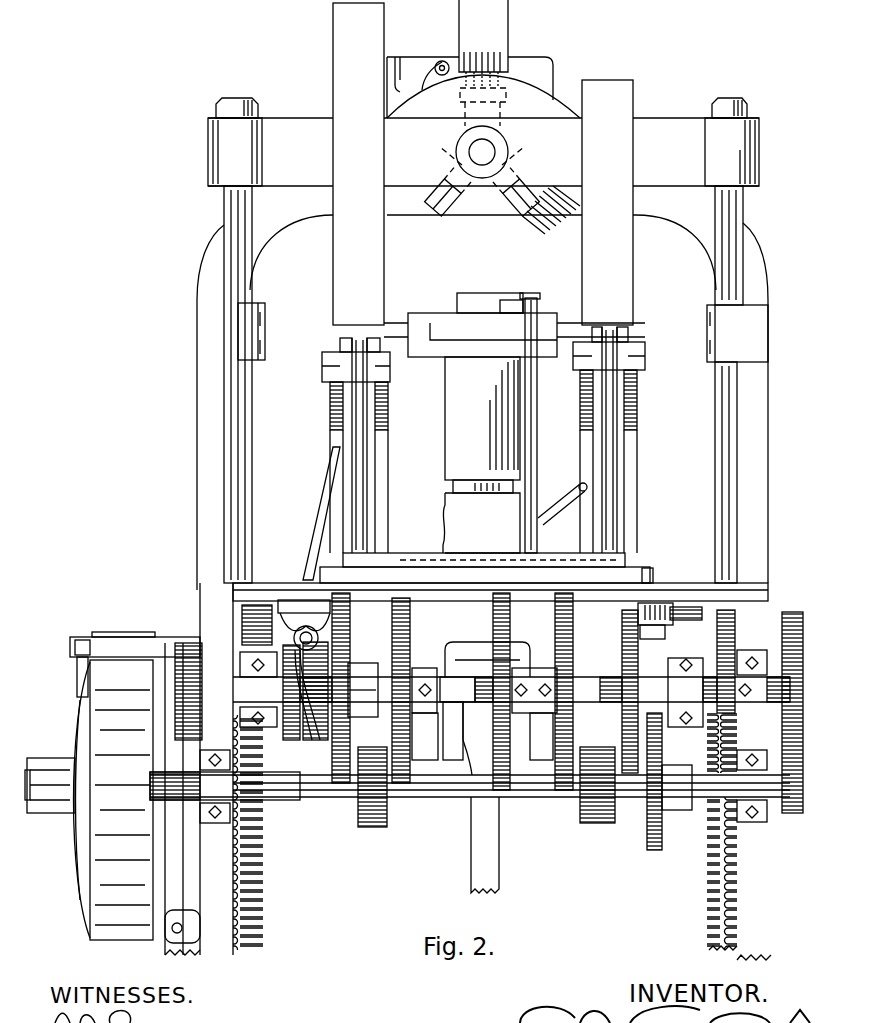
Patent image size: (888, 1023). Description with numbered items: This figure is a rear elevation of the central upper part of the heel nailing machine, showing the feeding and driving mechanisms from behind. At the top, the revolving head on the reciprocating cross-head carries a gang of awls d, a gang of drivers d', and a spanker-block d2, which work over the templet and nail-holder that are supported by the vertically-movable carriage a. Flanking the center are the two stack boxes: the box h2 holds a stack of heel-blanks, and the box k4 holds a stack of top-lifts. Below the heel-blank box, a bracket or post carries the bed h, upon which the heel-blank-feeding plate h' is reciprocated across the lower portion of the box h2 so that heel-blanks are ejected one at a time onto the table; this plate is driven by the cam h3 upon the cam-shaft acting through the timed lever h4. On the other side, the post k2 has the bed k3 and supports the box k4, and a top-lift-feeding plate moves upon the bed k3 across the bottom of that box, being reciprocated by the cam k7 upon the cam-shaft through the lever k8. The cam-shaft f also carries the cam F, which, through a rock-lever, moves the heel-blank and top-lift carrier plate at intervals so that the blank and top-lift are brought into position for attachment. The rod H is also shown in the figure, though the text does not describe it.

The drivers d' is at (502, 63).
The spanker-block d2 is at (434, 214).
The awls d is at (536, 197).
The box h2 is at (358, 164).
The box k4 is at (607, 202).
The carriage a is at (514, 325).
The heel-blank-feeding plate h' is at (343, 362).
The bed h is at (390, 445).
The lever h4 is at (340, 446).
The plunger rod H is at (372, 488).
The cam h3 is at (327, 600).
The bed k3 is at (625, 355).
The post k2 is at (637, 467).
The lever k8 is at (617, 518).
The cam-shaft f is at (485, 672).
The cam F is at (322, 735).
The cam k7 is at (555, 802).